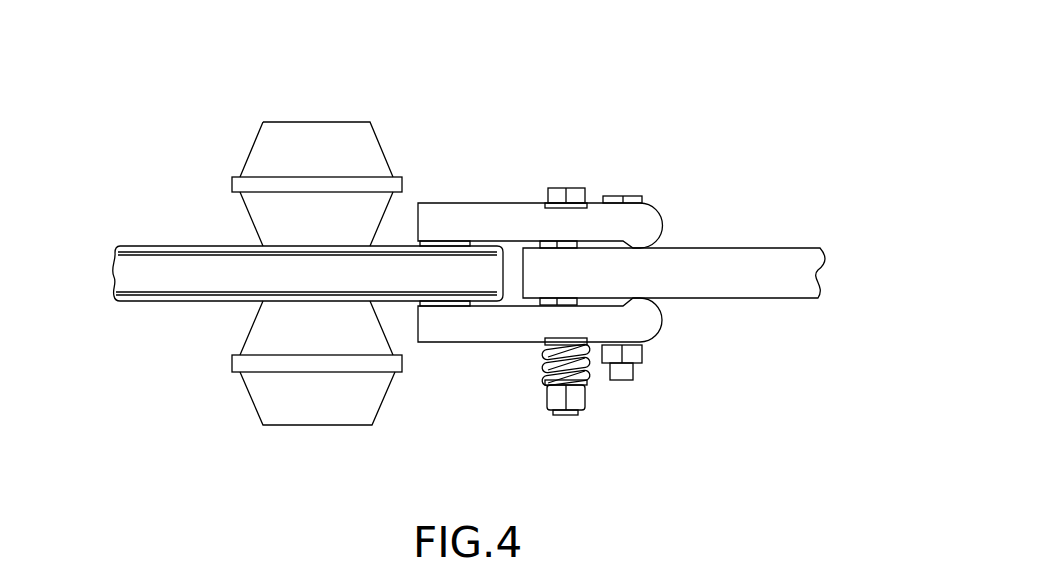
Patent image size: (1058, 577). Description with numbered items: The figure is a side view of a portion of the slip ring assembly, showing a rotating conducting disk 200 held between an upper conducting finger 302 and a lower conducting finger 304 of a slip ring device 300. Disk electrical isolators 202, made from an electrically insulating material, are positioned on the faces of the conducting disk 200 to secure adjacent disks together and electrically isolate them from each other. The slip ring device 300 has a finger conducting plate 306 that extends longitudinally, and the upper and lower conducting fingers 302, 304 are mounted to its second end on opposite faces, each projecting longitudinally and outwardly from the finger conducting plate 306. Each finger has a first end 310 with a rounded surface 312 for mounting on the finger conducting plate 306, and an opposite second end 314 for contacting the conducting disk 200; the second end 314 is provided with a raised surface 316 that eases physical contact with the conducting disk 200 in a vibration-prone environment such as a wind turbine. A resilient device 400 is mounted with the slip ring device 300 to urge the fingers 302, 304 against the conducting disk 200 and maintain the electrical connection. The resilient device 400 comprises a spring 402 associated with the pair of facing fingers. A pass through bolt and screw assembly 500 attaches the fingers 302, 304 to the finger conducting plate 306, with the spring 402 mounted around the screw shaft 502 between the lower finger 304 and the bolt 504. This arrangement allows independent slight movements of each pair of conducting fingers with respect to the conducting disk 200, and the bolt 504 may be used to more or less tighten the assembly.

The conducting disk 200 is at (148, 246).
The disk electrical isolator 202 is at (290, 162).
The slip ring device 300 is at (642, 257).
The upper conducting finger 302 is at (522, 190).
The lower conducting finger 304 is at (433, 350).
The finger conducting plate 306 is at (792, 263).
The first end 310 is at (641, 216).
The rounded surface 312 is at (652, 232).
The second end 314 is at (434, 212).
The raised surface 316 is at (447, 242).
The resilient device 400 is at (602, 407).
The spring 402 is at (613, 368).
The pass through bolt and screw assembly 500 is at (575, 177).
The screw shaft 502 is at (568, 365).
The bolt 504 is at (580, 400).